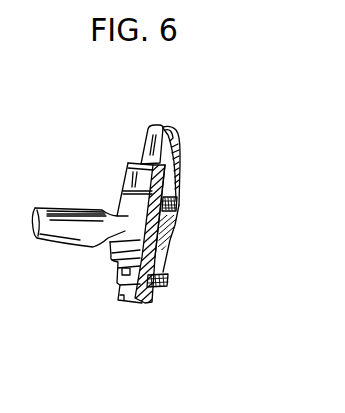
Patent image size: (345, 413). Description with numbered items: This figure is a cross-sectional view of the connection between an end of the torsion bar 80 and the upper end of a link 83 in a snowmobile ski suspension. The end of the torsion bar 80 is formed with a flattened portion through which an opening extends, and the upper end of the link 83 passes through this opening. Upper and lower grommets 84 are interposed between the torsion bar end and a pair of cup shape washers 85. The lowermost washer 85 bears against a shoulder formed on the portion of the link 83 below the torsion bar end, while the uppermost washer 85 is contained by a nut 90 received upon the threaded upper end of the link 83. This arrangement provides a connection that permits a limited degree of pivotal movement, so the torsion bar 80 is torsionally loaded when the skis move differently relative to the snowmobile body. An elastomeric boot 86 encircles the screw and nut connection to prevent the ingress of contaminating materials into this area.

The torsion bar 80 is at (63, 203).
The link 83 is at (120, 288).
The grommet 84 is at (174, 256).
The cup shape washer 85 is at (175, 208).
The elastomeric boot 86 is at (178, 137).
The nut 90 is at (181, 170).